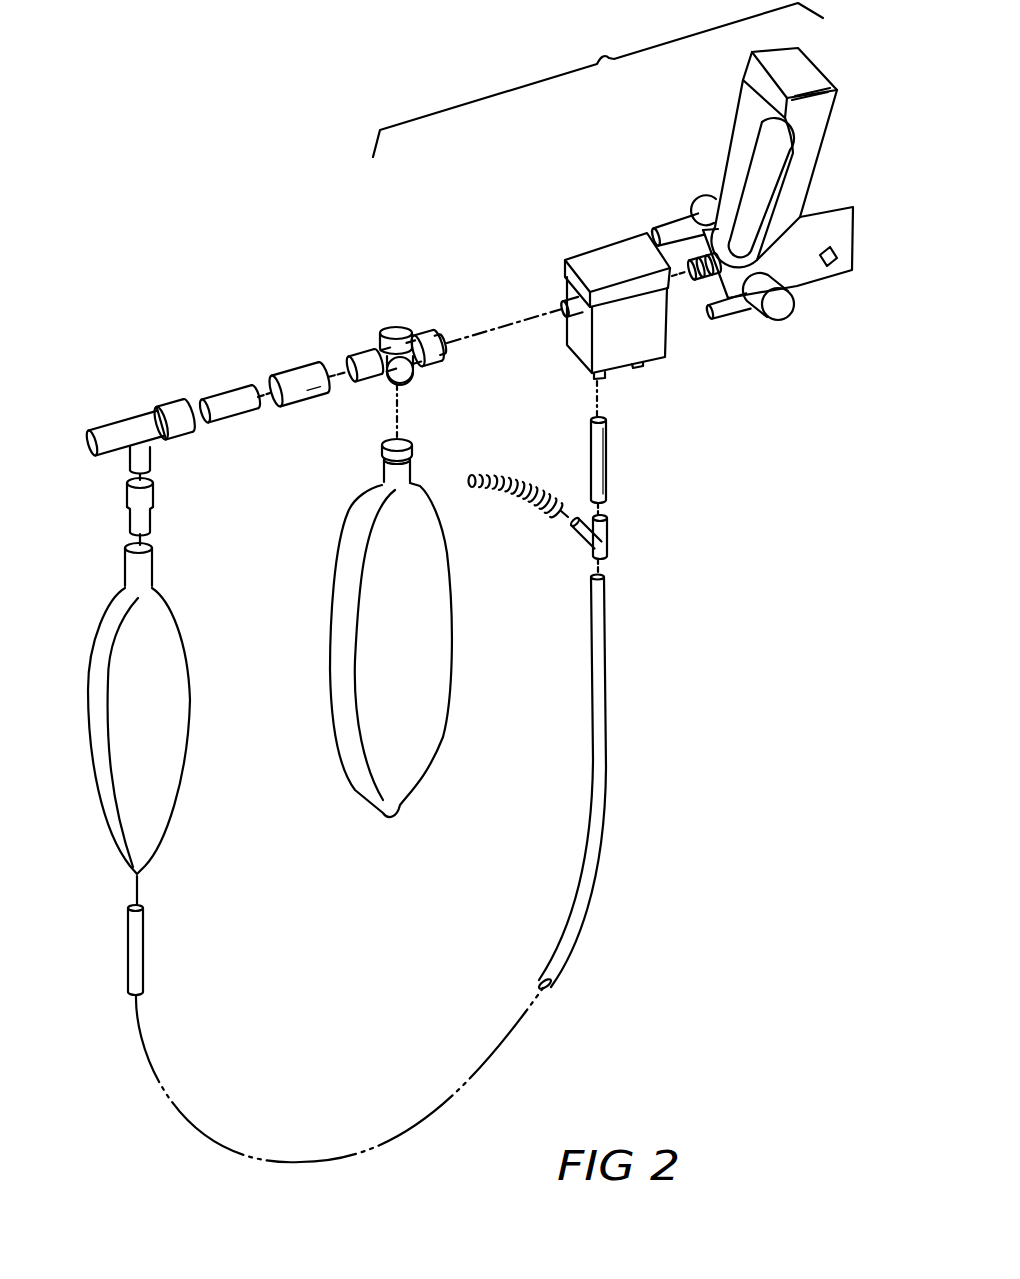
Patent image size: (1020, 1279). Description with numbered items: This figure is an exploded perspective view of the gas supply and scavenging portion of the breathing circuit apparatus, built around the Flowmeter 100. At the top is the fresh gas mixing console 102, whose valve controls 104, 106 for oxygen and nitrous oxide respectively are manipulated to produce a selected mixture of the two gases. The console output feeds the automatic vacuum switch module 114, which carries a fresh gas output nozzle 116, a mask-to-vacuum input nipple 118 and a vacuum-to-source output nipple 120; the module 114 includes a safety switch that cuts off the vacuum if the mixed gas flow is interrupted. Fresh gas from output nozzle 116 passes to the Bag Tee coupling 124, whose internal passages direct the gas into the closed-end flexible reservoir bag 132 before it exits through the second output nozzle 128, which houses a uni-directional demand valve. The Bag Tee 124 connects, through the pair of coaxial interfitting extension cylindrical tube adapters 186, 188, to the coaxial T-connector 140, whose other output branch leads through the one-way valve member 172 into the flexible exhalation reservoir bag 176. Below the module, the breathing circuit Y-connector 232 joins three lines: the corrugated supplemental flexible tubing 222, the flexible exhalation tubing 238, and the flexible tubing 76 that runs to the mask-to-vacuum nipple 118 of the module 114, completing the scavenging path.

The Flowmeter 100 is at (598, 80).
The fresh gas mixing console 102 is at (791, 74).
The valve control for oxygen 104 is at (783, 308).
The valve control for nitrous oxide 106 is at (716, 193).
The automatic vacuum switch module 114 is at (605, 263).
The fresh gas output nozzle 116 is at (570, 303).
The mask-to-vacuum input nipple 118 is at (595, 376).
The vacuum-to-source output nipple 120 is at (633, 366).
The flexible tubing 76 is at (607, 462).
The breathing circuit Y-connector 232 is at (616, 540).
The supplemental flexible tubing 222 is at (522, 507).
The flexible exhalation tubing 238 is at (600, 723).
The flexible exhalation reservoir bag 176 is at (170, 773).
The one-way valve member 172 is at (152, 512).
The T-connector 140 is at (121, 427).
The extension cylindrical tube adapter 186 is at (232, 397).
The extension cylindrical tube adapter 188 is at (300, 373).
The second output nozzle 128 is at (370, 357).
The Bag Tee coupling 124 is at (397, 334).
The closed-end flexible reservoir bag 132 is at (391, 748).